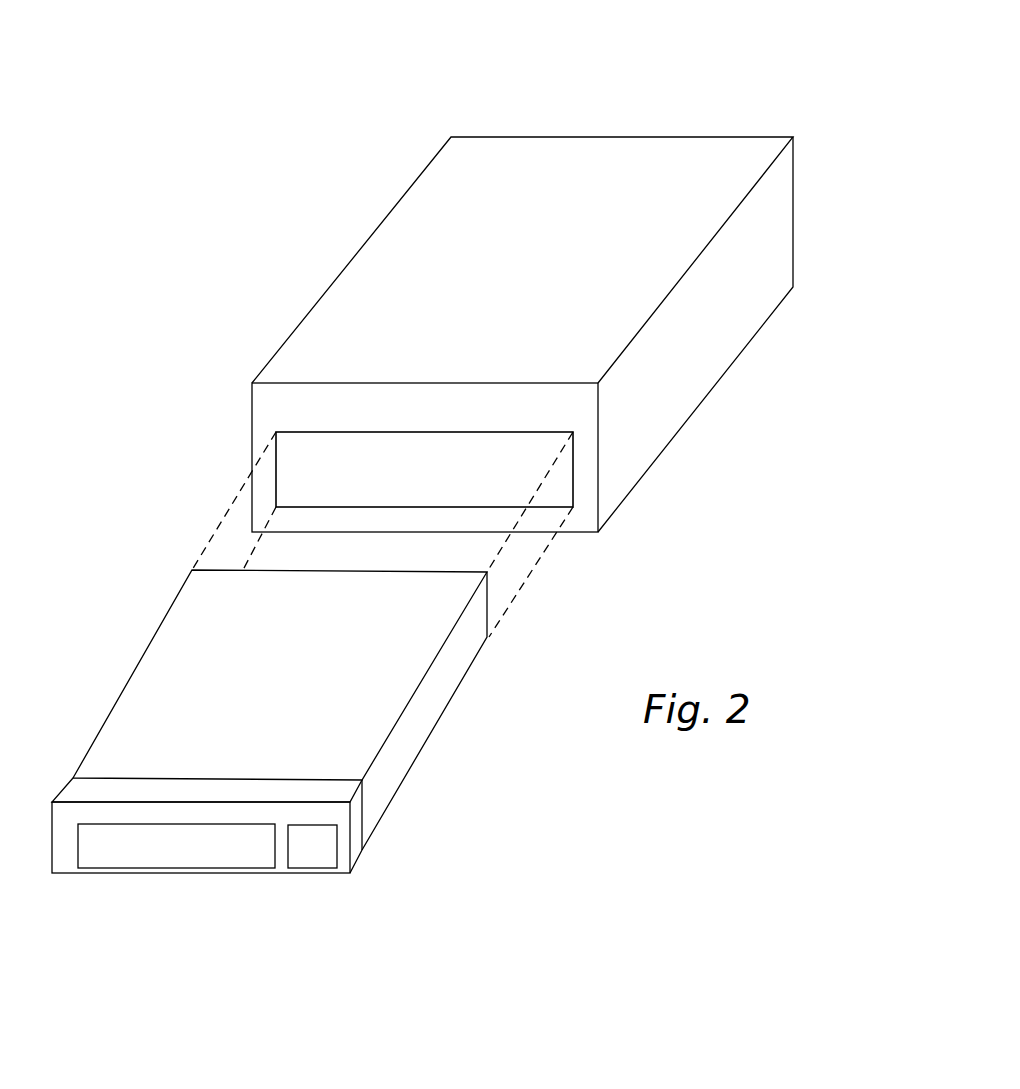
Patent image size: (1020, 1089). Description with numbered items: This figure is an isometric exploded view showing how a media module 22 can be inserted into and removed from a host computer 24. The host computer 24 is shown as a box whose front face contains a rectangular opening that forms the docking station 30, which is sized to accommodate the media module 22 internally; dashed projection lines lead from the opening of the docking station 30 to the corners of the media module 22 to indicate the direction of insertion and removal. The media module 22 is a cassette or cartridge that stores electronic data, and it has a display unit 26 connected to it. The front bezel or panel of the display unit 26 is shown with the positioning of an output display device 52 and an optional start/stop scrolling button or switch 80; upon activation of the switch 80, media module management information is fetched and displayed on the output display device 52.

The media module 22 is at (355, 459).
The host computer 24 is at (797, 210).
The display unit 26 is at (357, 842).
The docking station 30 is at (309, 431).
The output display device 52 is at (176, 847).
The start/stop scrolling button or switch 80 is at (313, 847).